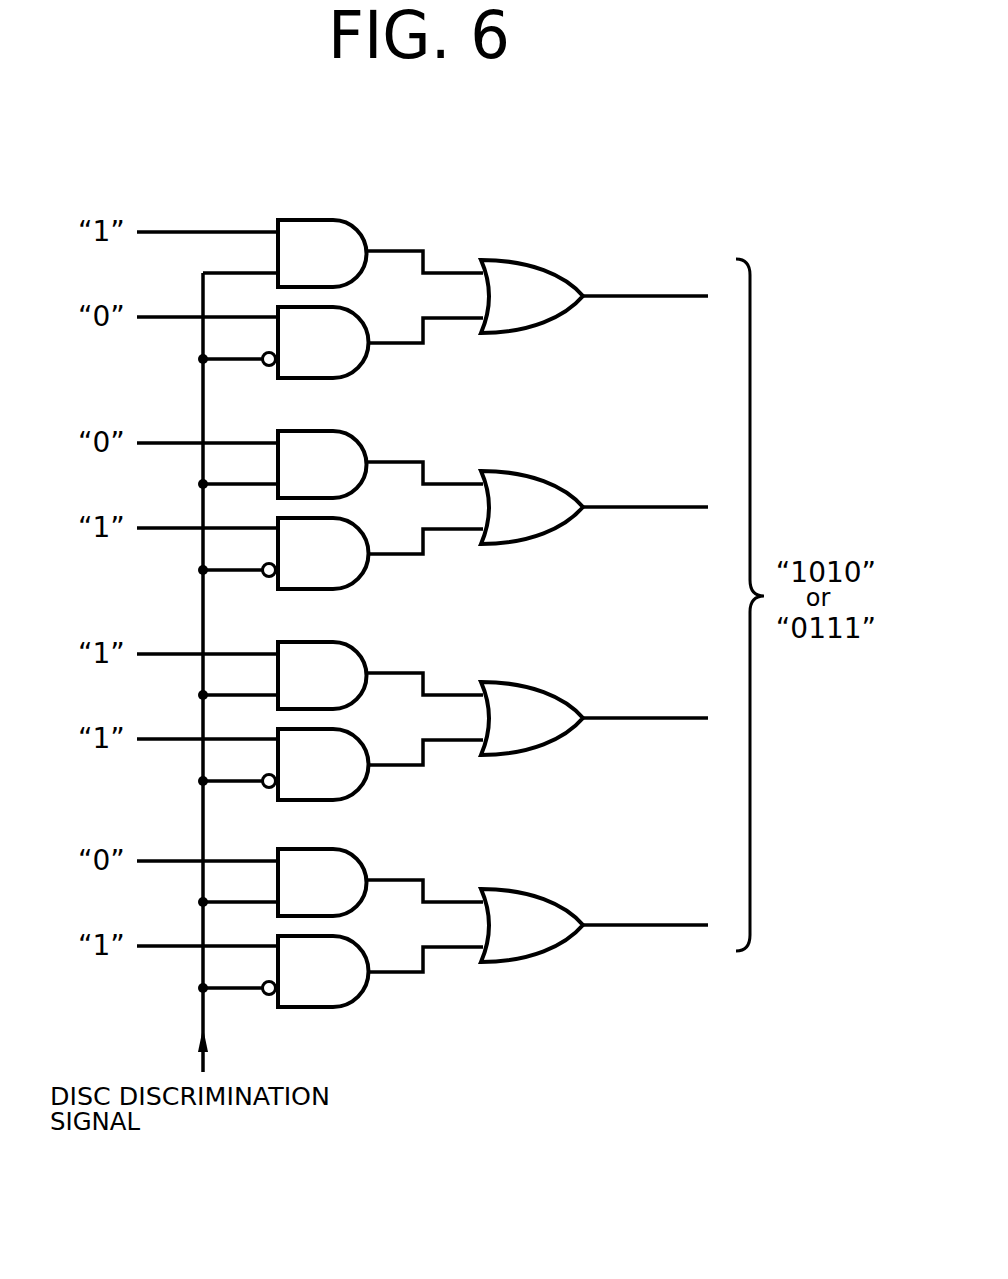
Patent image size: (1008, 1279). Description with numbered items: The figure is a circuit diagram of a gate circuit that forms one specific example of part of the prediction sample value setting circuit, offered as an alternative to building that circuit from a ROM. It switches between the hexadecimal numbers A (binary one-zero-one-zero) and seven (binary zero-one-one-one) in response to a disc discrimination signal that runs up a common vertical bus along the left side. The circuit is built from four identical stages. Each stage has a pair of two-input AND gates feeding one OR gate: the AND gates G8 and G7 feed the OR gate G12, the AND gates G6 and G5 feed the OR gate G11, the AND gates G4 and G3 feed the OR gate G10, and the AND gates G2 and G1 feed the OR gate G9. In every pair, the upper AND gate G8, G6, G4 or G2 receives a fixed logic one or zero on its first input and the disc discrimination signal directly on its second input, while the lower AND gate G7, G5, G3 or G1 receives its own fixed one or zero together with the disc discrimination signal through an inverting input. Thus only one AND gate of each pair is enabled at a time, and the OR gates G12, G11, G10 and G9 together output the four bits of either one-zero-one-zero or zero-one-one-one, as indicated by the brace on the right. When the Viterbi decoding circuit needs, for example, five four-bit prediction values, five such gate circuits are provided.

The AND gate G1 is at (380, 994).
The AND gate G2 is at (380, 870).
The AND gate G3 is at (380, 778).
The AND gate G4 is at (380, 663).
The AND gate G5 is at (380, 568).
The AND gate G6 is at (380, 449).
The AND gate G7 is at (352, 372).
The AND gate G8 is at (358, 222).
The OR gate G9 is at (594, 901).
The OR gate G10 is at (594, 690).
The OR gate G11 is at (594, 479).
The OR gate G12 is at (566, 272).